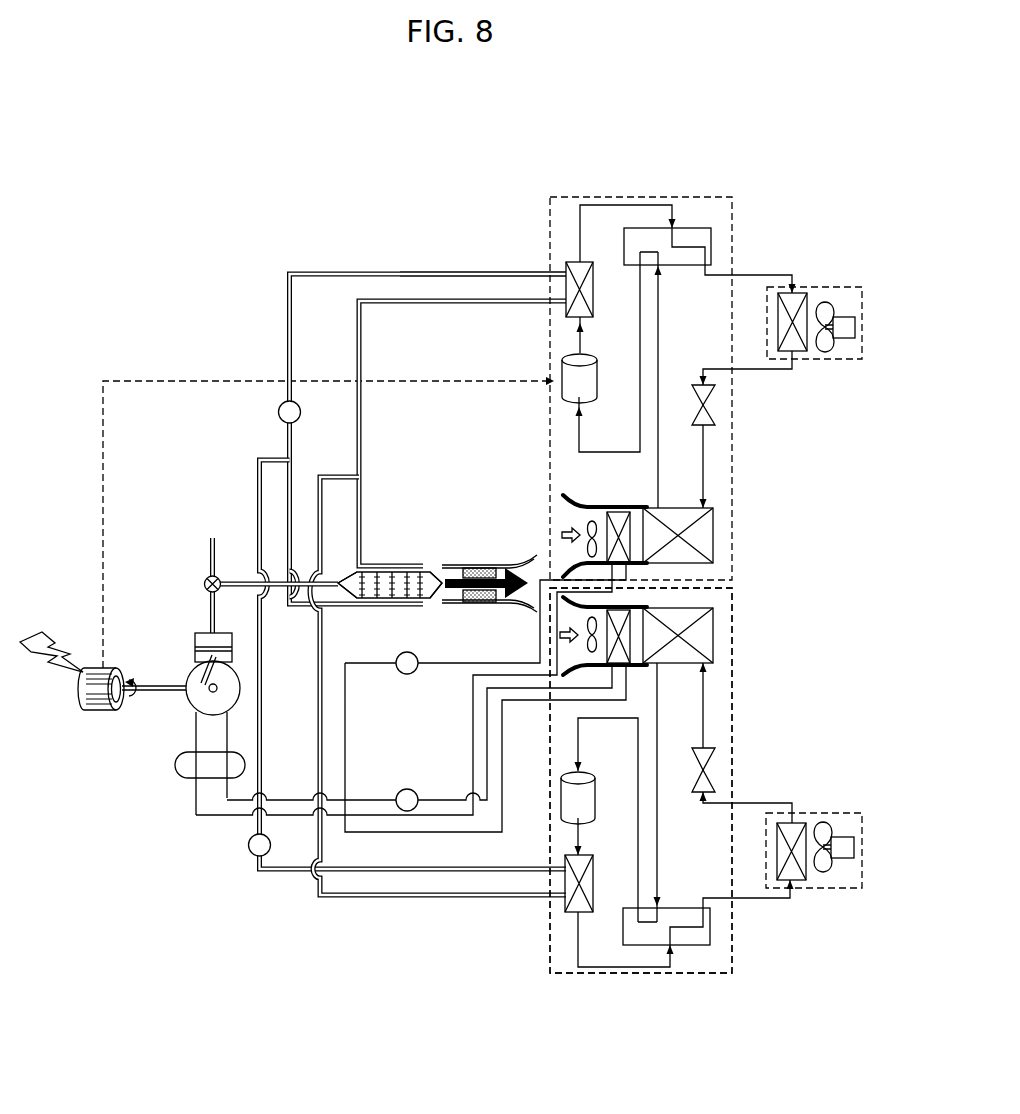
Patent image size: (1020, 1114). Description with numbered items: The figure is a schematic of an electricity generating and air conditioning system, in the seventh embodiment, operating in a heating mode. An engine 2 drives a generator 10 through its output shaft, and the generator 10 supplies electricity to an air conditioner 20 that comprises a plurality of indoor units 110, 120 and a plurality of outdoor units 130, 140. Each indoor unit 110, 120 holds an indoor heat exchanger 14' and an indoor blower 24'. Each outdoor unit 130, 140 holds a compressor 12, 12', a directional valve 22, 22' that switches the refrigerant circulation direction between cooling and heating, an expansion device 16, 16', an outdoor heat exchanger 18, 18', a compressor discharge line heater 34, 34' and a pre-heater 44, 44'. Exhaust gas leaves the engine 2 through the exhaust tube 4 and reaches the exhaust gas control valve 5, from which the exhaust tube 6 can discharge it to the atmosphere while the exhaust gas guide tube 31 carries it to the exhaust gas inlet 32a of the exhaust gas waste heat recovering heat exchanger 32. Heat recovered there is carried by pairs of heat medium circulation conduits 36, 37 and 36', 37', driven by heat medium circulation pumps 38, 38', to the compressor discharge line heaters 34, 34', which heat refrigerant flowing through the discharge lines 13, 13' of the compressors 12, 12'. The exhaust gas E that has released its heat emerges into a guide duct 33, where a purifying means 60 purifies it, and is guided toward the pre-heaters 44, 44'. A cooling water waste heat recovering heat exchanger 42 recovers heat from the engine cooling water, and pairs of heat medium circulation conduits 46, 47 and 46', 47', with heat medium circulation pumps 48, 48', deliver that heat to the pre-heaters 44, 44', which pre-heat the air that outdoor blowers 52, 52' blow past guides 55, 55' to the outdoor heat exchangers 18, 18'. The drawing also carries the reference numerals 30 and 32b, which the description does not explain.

The engine 2 is at (192, 673).
The exhaust tube 4 is at (212, 603).
The exhaust gas control valve 5 is at (205, 580).
The exhaust tube 6 is at (212, 547).
The generator 10 is at (92, 710).
The compressor 12 is at (591, 399).
The compressor 12' is at (597, 783).
The discharge line 13 is at (604, 336).
The discharge line 13' is at (606, 836).
The indoor heat exchanger 14' is at (754, 549).
The expansion device 16 is at (741, 446).
The expansion device 16' is at (739, 727).
The outdoor heat exchanger 18 is at (711, 531).
The outdoor heat exchanger 18' is at (714, 638).
The air conditioner 20 is at (716, 984).
The directional valve 22 is at (686, 349).
The directional valve 22' is at (694, 834).
The indoor blower 24' is at (845, 610).
The waste heat recovery system 30 is at (418, 266).
The exhaust gas guide tube 31 is at (245, 582).
The exhaust gas waste heat recovering heat exchanger 32 is at (393, 602).
The exhaust gas inlet 32a is at (352, 599).
The converter outlet 32b is at (437, 594).
The guide duct 33 is at (516, 556).
The compressor discharge line heater 34 is at (548, 265).
The compressor discharge line heater 34' is at (550, 919).
The heat medium circulation conduit 36 is at (428, 412).
The heat medium circulation conduit 36' is at (413, 692).
The heat medium circulation conduit 37 is at (462, 433).
The heat medium circulation conduit 37' is at (438, 713).
The heat medium circulation pump 38 is at (253, 410).
The heat medium circulation pump 38' is at (236, 865).
The cooling water waste heat recovering heat exchanger 42 is at (178, 775).
The pre-heater 44 is at (624, 518).
The pre-heater 44' is at (632, 654).
The heat medium circulation conduit 46 is at (485, 637).
The heat medium circulation conduit 46' is at (419, 731).
The heat medium circulation conduit 47 is at (485, 764).
The heat medium circulation conduit 47' is at (404, 714).
The heat medium circulation pump 48 is at (422, 682).
The heat medium circulation pump 48' is at (422, 780).
The outdoor blower 52 is at (597, 511).
The outdoor blower 52' is at (573, 672).
The guide 55 is at (603, 516).
The guide 55' is at (580, 663).
The purifying means 60 is at (478, 568).
The exhaust gas E is at (483, 599).
The indoor unit 110 is at (823, 287).
The indoor unit 120 is at (823, 813).
The outdoor unit 130 is at (640, 197).
The outdoor unit 140 is at (630, 973).